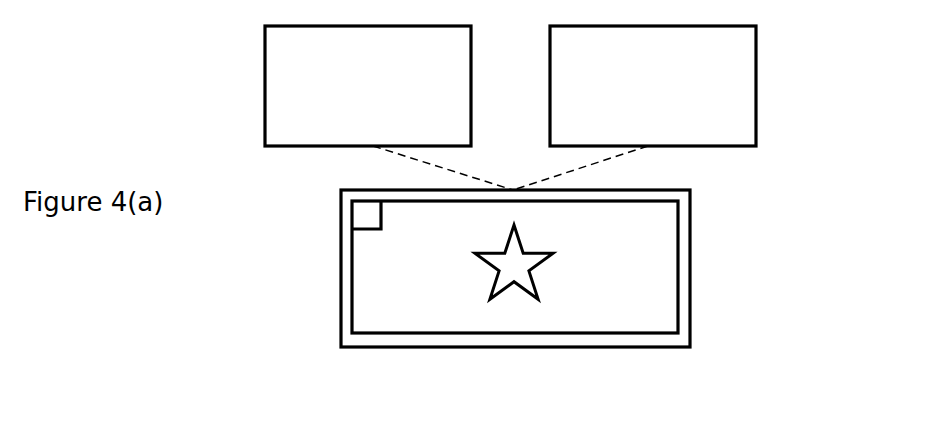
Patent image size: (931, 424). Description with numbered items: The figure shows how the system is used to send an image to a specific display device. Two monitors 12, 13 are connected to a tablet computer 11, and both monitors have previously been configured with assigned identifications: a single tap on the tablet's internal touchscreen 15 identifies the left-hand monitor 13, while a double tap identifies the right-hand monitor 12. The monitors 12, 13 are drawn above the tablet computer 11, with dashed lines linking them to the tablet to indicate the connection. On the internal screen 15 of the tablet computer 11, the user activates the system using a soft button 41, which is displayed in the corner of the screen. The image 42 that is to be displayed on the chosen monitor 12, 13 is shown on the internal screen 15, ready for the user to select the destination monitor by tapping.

The tablet computer 11 is at (690, 267).
The right-hand monitor 12 is at (756, 84).
The left-hand monitor 13 is at (265, 84).
The internal touchscreen 15 is at (352, 297).
The soft button 41 is at (343, 214).
The image 42 is at (553, 254).